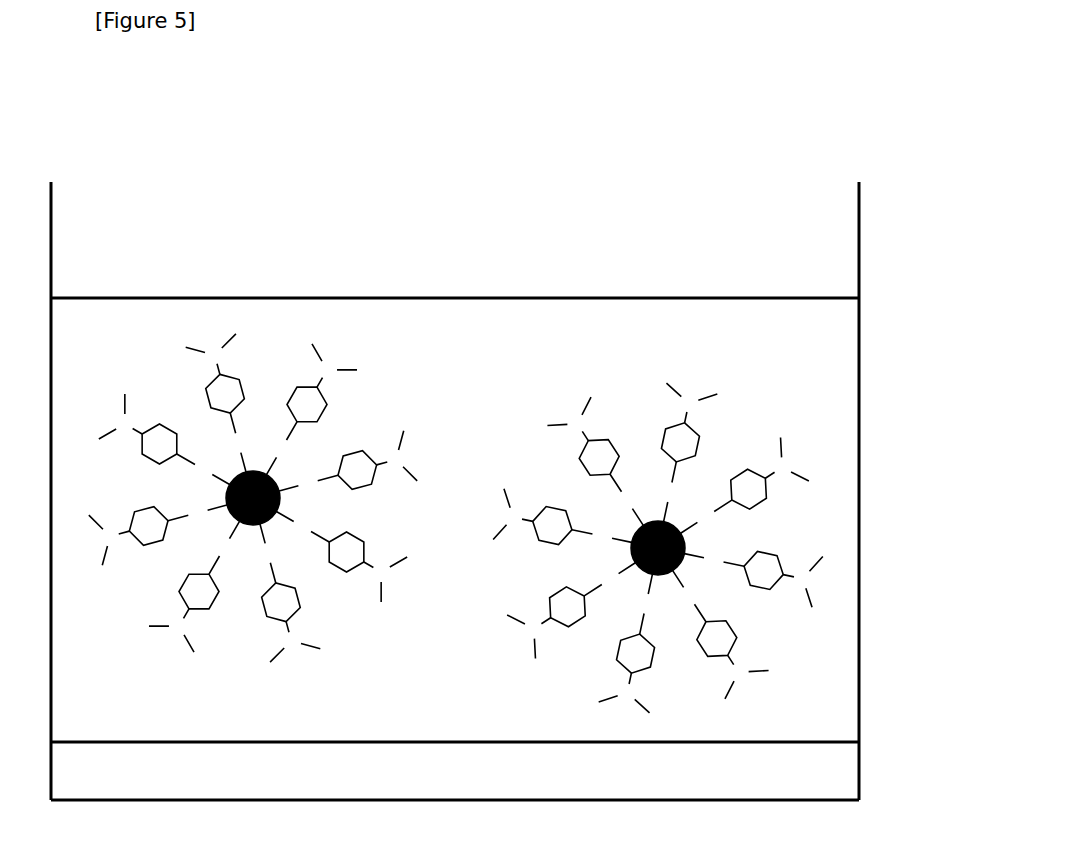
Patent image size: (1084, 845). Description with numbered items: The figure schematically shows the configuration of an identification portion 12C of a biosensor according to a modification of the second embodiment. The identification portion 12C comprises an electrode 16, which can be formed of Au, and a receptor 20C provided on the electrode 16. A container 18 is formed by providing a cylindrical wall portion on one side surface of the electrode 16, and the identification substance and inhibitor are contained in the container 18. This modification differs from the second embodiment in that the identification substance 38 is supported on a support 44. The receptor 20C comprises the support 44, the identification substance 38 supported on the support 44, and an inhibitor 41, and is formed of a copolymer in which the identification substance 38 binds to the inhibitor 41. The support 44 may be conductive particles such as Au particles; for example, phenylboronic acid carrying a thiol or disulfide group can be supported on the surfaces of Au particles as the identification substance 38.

The identification portion 12C is at (503, 437).
The electrode 16 is at (815, 741).
The container 18 is at (859, 270).
The receptor 20C is at (808, 365).
The identification substance 38 is at (455, 457).
The inhibitor 41 is at (833, 442).
The support 44 is at (258, 470).